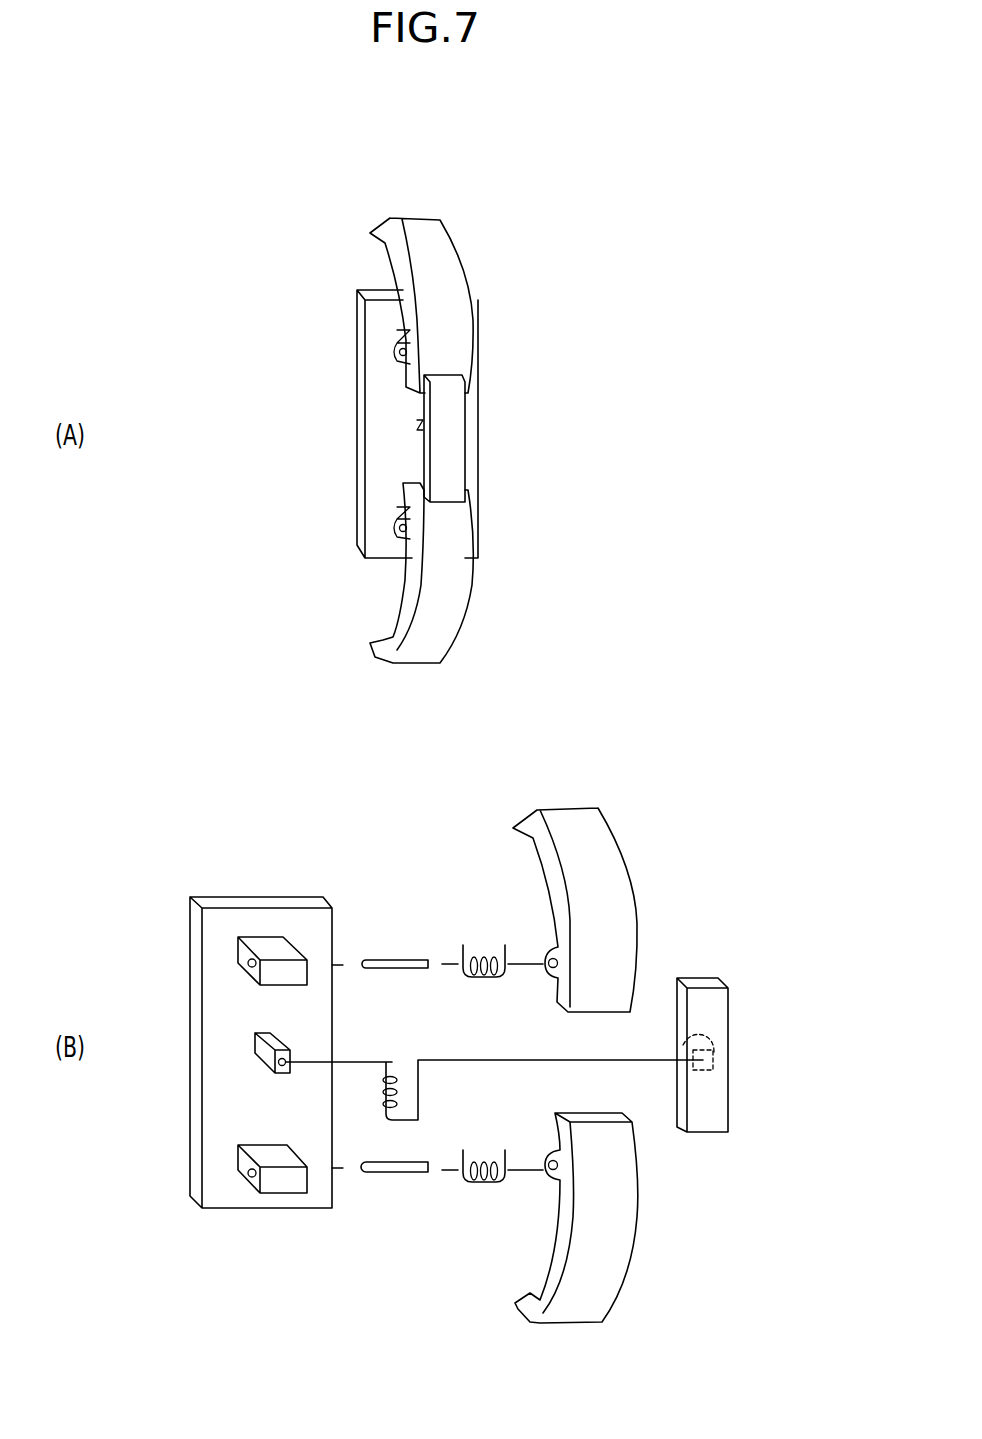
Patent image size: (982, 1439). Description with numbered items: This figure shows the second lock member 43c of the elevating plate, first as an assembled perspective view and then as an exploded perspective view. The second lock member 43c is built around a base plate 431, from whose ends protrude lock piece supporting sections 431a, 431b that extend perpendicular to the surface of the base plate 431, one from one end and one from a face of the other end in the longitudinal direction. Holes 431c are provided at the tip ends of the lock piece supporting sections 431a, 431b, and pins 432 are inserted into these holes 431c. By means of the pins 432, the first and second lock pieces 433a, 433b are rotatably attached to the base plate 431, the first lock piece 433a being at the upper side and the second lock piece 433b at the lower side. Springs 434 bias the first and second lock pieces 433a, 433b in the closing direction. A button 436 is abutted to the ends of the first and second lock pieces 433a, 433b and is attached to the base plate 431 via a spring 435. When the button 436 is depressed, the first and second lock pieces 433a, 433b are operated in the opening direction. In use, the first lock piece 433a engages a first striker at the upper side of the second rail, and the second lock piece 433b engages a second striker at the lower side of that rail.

The second lock member 43c is at (486, 251).
The base plate 431 is at (234, 888).
The lock piece supporting section 431a is at (287, 943).
The lock piece supporting section 431b is at (282, 1187).
The hole 431c is at (247, 963).
The pin 432 is at (397, 957).
The first lock piece 433a is at (608, 858).
The second lock piece 433b is at (608, 1270).
The spring 434 is at (487, 953).
The spring 435 is at (394, 1088).
The button 436 is at (718, 1017).